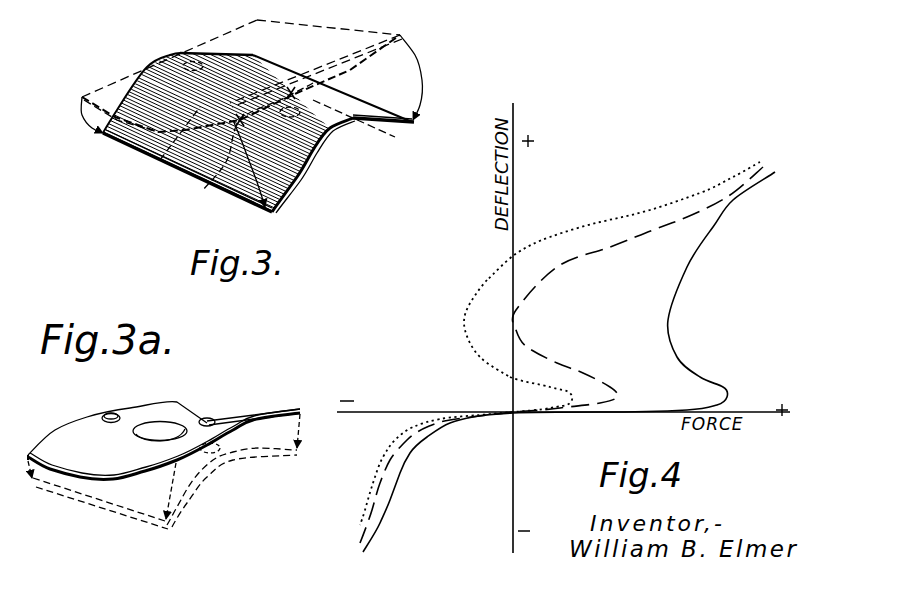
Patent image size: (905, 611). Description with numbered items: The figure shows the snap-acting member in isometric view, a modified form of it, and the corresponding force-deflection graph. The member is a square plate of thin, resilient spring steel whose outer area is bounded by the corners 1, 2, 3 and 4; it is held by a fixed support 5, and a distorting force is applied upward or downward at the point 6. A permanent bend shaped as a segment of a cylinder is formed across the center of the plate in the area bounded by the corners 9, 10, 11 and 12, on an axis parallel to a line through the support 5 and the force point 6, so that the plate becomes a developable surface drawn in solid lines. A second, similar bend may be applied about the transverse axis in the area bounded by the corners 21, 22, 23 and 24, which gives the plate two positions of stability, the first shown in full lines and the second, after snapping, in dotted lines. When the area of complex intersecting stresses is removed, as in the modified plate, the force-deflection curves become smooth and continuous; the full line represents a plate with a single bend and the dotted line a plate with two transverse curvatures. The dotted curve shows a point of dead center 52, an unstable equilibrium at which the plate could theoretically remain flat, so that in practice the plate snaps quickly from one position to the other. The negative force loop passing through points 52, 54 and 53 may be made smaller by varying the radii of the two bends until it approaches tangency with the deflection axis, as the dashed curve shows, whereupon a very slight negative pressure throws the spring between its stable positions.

In FIG. 3, the plate corner 1 is at (257, 22).
In FIG. 3A, the plate corner 1 is at (177, 402).
In FIG. 3, the plate corner 2 is at (391, 127).
In FIG. 3A, the plate corner 2 is at (257, 416).
In FIG. 3, the plate corner 3 is at (193, 181).
In FIG. 3A, the plate corner 3 is at (168, 529).
In FIG. 3, the plate corner 4 is at (129, 103).
In FIG. 3A, the plate corner 4 is at (30, 452).
In FIG. 3, the fixed support 5 is at (182, 58).
In FIG. 3A, the fixed support 5 is at (111, 413).
In FIG. 3, the force application point 6 is at (316, 138).
In FIG. 3A, the force application point 6 is at (209, 418).
In FIG. 3, the first bend area corner 9 is at (195, 53).
In FIG. 3, the first bend area corner 10 is at (374, 121).
In FIG. 3, the first bend area corner 11 is at (303, 152).
In FIG. 3, the first bend area corner 12 is at (130, 77).
In FIG. 3, the second bend area corner 21 is at (313, 83).
In FIG. 3, the second bend area corner 22 is at (350, 97).
In FIG. 3, the second bend area corner 23 is at (204, 186).
In FIG. 3, the second bend area corner 24 is at (160, 162).
In FIG. 4, the point of dead center 52 is at (512, 378).
In FIG. 4, the negative force loop point 53 is at (512, 254).
In FIG. 4, the negative force loop point 54 is at (465, 330).